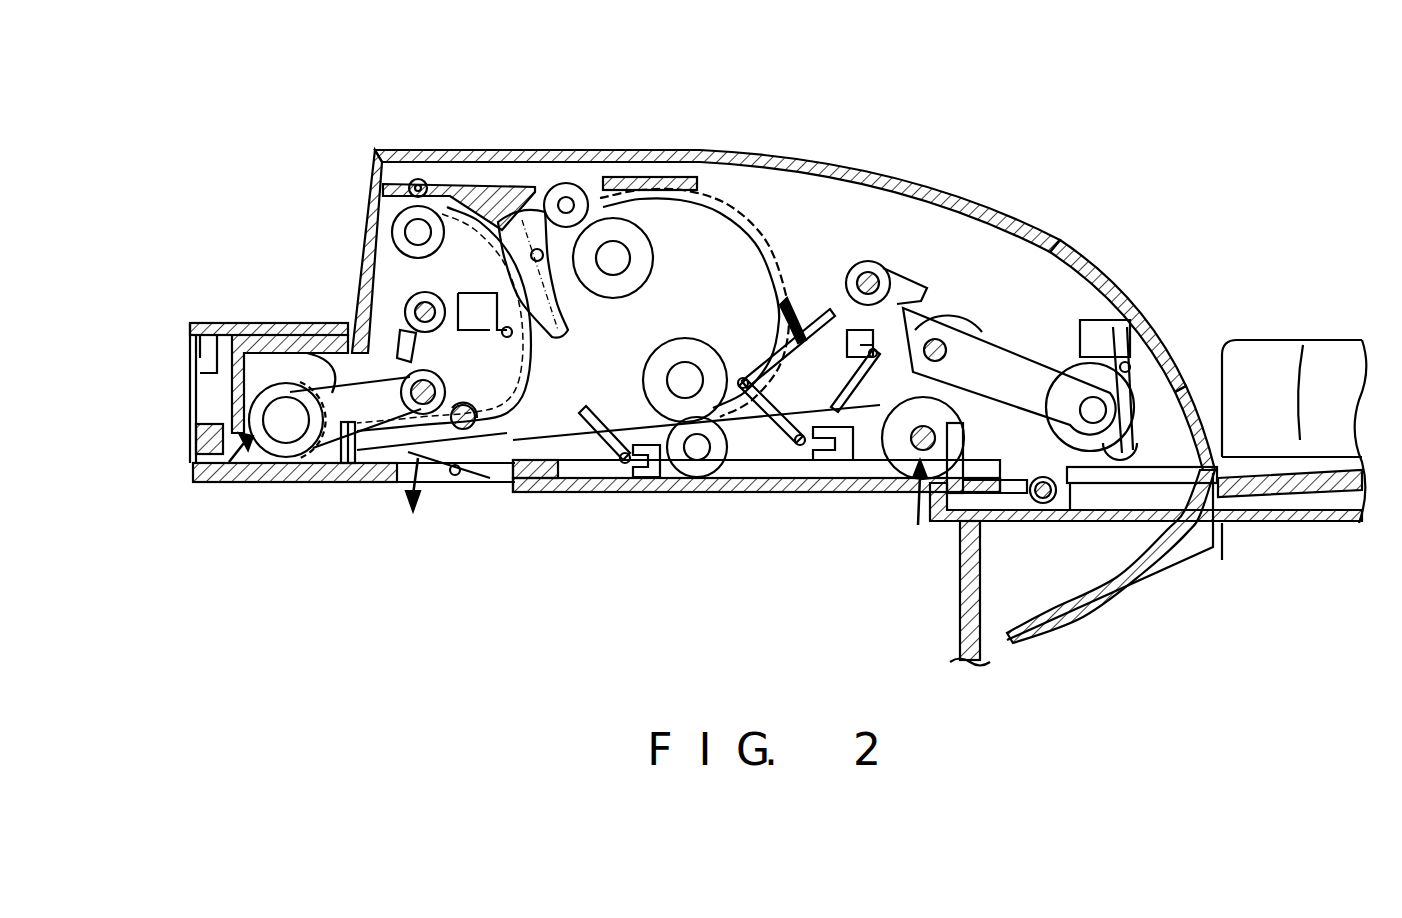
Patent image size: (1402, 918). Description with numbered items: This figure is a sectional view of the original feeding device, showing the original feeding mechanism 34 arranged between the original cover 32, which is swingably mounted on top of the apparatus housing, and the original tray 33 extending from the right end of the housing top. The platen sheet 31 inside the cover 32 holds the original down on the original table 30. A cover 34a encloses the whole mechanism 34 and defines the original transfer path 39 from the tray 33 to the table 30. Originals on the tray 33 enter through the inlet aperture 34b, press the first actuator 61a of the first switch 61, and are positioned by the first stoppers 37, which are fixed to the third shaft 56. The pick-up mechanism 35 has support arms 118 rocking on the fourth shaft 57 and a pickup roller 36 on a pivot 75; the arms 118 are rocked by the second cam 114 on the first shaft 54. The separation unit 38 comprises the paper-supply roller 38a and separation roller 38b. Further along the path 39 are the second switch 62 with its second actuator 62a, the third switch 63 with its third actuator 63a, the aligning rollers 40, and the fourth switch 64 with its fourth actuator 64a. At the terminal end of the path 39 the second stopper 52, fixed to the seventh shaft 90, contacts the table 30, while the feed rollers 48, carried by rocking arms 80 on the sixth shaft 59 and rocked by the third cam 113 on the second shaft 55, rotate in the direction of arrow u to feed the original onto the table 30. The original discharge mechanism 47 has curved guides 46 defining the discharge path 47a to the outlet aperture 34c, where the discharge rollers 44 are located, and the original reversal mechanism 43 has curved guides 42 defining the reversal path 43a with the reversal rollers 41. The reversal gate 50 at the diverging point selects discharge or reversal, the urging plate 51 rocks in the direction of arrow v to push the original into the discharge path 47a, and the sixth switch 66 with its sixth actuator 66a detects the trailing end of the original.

The original table 30 is at (200, 483).
The platen sheet 31 is at (200, 448).
The original cover 32 is at (220, 323).
The original tray 33 is at (1303, 345).
The original feeding mechanism 34 is at (835, 150).
The cover 34a is at (885, 190).
The inlet aperture 34b is at (1213, 367).
The outlet aperture 34c is at (367, 207).
The pick-up mechanism 35 is at (1074, 465).
The pickup roller 36 is at (1068, 366).
The first stoppers 37 is at (950, 500).
The separation unit 38 is at (973, 267).
The paper-supply roller 38a is at (960, 322).
The separation roller 38b is at (905, 482).
The original transfer path 39 is at (530, 462).
The aligning rollers 40 is at (693, 462).
The reversal rollers 41 is at (620, 215).
The curved guides 42 is at (762, 233).
The original reversal mechanism 43 is at (755, 185).
The reversal path 43a is at (700, 185).
The discharge rollers 44 is at (440, 195).
The curved guides 46 is at (505, 200).
The original discharge mechanism 47 is at (490, 142).
The discharge path 47a is at (547, 380).
The feed rollers 48 is at (297, 457).
The reversal gate 50 is at (570, 315).
The urging plate 51 is at (470, 480).
The second stopper 52 is at (337, 462).
The first shaft 54 is at (865, 262).
The second shaft 55 is at (410, 293).
The third shaft 56 is at (1040, 505).
The fourth shaft 57 is at (943, 315).
The sixth shaft 59 is at (401, 397).
The first switch 61 is at (1097, 326).
The first actuator 61a is at (1113, 450).
The second switch 62 is at (843, 323).
The second actuator 62a is at (773, 340).
The third switch 63 is at (845, 490).
The third actuator 63a is at (767, 450).
The fourth switch 64 is at (624, 485).
The fourth actuator 64a is at (573, 450).
The sixth switch 66 is at (470, 293).
The sixth actuator 66a is at (560, 350).
The pivot 75 is at (1097, 408).
The rocking arms 80 is at (282, 327).
The seventh shaft 90 is at (470, 407).
The third cam 113 is at (400, 330).
The second cam 114 is at (885, 272).
The support arms 118 is at (962, 540).
The direction t is at (917, 509).
The arrow u is at (233, 455).
The arrow v is at (402, 483).